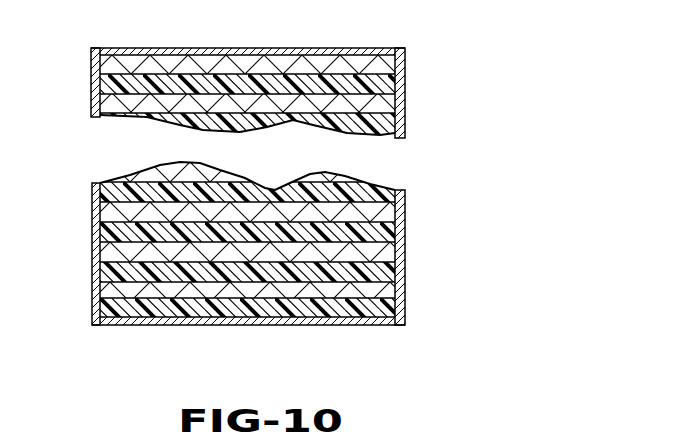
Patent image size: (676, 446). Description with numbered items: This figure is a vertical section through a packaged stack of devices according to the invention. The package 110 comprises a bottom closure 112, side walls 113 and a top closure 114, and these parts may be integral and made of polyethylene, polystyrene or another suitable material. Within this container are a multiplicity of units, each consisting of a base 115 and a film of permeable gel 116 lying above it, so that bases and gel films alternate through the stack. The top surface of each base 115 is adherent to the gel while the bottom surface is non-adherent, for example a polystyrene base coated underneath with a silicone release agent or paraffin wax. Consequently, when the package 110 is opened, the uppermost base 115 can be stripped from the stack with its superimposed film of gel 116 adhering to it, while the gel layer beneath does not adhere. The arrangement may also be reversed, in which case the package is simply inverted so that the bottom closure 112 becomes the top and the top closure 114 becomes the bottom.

The package 110 is at (441, 188).
The bottom closure 112 is at (336, 326).
The side walls 113 is at (405, 276).
The top closure 114 is at (287, 50).
The base 115 is at (106, 88).
The film of permeable gel 116 is at (192, 60).